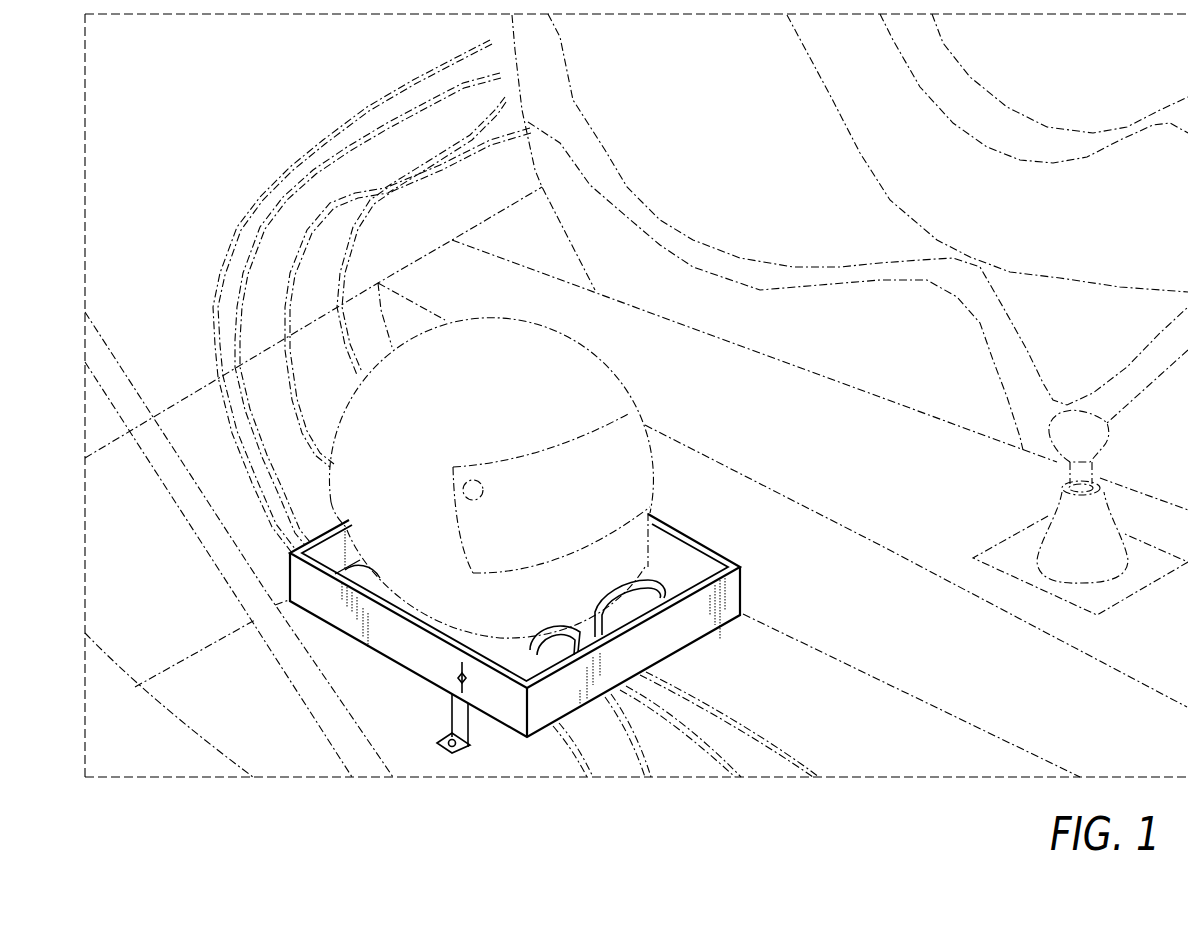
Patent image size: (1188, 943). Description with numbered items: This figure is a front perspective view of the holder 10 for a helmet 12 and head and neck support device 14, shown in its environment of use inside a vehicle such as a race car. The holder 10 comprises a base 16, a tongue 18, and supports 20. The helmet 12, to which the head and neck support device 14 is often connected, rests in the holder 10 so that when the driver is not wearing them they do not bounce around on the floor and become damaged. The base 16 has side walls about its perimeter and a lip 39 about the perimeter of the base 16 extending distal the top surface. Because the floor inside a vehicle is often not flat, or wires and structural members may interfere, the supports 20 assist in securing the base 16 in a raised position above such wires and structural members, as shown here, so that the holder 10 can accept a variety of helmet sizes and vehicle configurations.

The holder 10 is at (680, 479).
The helmet 12 is at (562, 385).
The head and neck support device 14 is at (550, 640).
The base 16 is at (727, 591).
The tongue 18 is at (623, 612).
The supports 20 is at (447, 757).
The lip 39 is at (697, 547).